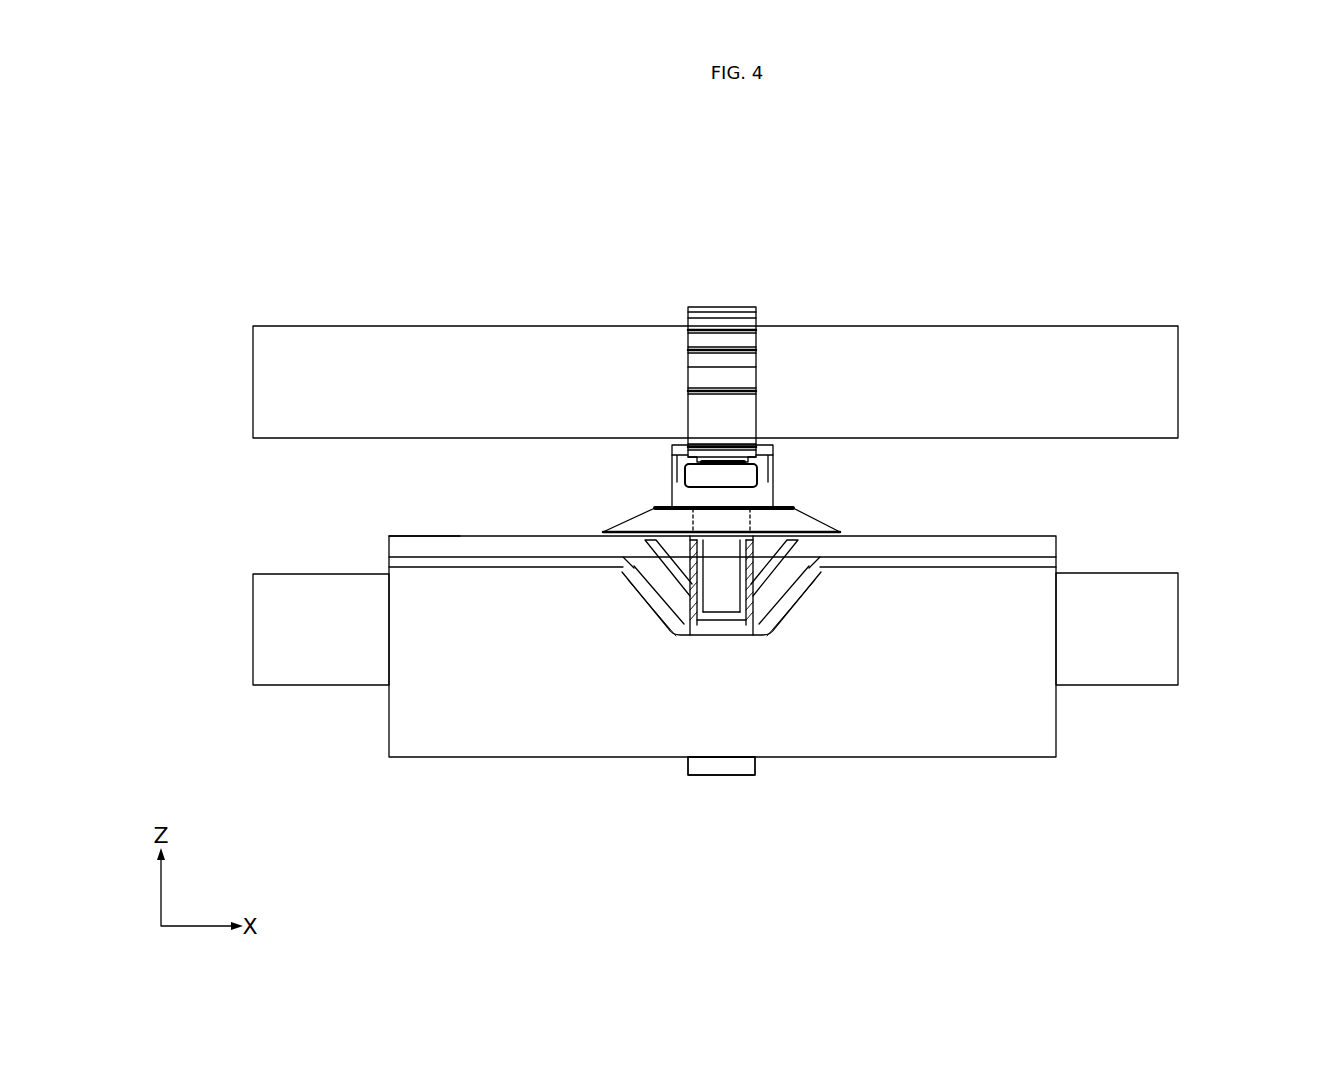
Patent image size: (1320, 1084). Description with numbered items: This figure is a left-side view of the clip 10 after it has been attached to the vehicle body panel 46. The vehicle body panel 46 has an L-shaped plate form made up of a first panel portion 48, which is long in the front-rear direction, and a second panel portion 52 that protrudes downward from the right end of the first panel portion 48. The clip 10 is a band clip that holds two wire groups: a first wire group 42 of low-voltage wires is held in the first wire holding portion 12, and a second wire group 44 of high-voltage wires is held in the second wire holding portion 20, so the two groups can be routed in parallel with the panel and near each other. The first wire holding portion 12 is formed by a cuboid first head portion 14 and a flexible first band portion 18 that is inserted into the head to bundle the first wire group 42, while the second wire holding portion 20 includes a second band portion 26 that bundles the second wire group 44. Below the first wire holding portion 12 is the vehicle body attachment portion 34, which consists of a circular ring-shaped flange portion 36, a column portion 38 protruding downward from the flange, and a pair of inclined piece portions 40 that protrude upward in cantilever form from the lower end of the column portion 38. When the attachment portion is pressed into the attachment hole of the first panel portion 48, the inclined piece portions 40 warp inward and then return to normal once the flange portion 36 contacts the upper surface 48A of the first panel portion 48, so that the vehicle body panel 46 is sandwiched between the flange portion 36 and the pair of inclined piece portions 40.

The clip 10 is at (730, 252).
The first wire holding portion 12 is at (783, 257).
The first head portion 14 is at (760, 463).
The first band portion 18 is at (738, 340).
The second wire holding portion 20 is at (737, 802).
The second band portion 26 is at (718, 765).
The vehicle body attachment portion 34 is at (533, 252).
The flange portion 36 is at (665, 514).
The column portion 38 is at (686, 597).
The inclined piece portions 40 is at (797, 613).
The first wire group 42 is at (1158, 378).
The second wire group 44 is at (1158, 637).
The vehicle body panel 46 is at (782, 616).
The first panel portion 48 is at (1031, 542).
The upper surface of first panel portion 48A is at (440, 534).
The second panel portion 52 is at (1035, 615).